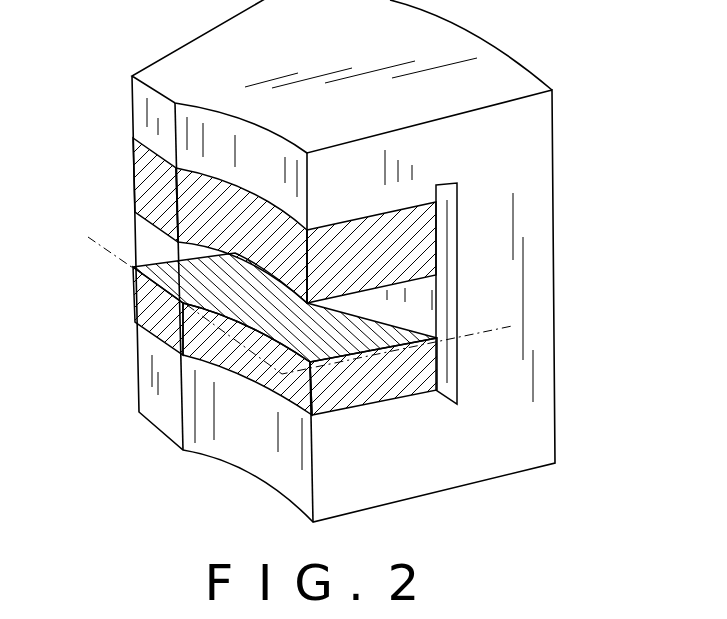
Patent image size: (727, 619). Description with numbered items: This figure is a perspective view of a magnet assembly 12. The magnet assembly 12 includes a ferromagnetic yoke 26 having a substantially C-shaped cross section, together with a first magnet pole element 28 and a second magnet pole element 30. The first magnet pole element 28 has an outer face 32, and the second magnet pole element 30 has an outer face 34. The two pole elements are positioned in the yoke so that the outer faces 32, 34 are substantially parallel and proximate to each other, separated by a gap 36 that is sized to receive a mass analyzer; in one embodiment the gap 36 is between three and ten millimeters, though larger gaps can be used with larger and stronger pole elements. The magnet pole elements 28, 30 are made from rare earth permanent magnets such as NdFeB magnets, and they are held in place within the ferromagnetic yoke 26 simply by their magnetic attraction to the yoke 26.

The magnet assembly 12 is at (567, 63).
The ferromagnetic yoke 26 is at (541, 229).
The first magnet pole element 28 is at (133, 180).
The second magnet pole element 30 is at (133, 303).
The outer face 32 is at (422, 280).
The outer face 34 is at (407, 323).
The gap 36 is at (140, 247).